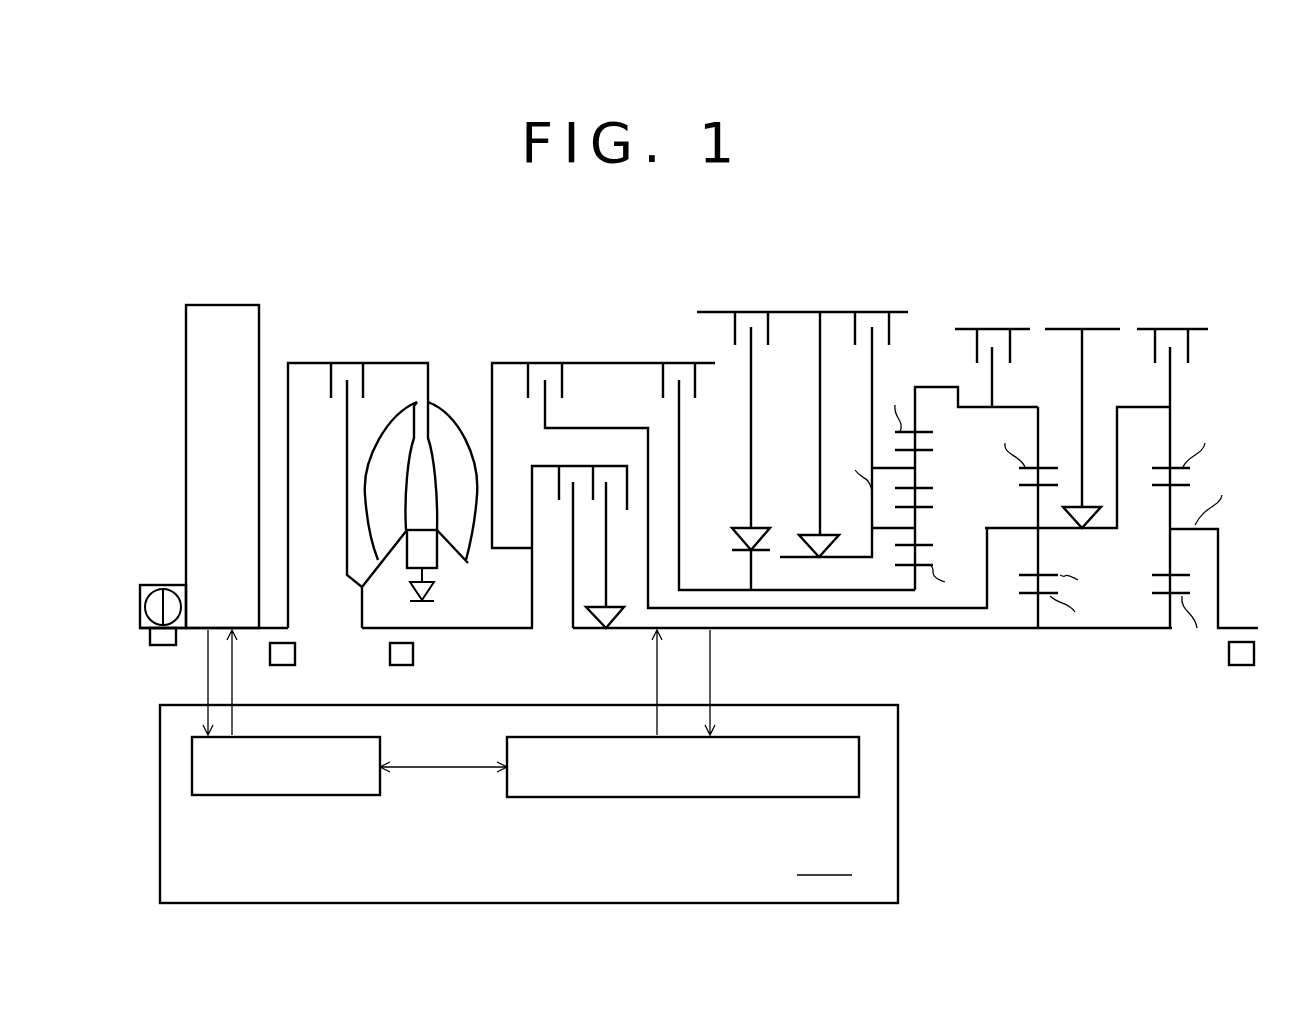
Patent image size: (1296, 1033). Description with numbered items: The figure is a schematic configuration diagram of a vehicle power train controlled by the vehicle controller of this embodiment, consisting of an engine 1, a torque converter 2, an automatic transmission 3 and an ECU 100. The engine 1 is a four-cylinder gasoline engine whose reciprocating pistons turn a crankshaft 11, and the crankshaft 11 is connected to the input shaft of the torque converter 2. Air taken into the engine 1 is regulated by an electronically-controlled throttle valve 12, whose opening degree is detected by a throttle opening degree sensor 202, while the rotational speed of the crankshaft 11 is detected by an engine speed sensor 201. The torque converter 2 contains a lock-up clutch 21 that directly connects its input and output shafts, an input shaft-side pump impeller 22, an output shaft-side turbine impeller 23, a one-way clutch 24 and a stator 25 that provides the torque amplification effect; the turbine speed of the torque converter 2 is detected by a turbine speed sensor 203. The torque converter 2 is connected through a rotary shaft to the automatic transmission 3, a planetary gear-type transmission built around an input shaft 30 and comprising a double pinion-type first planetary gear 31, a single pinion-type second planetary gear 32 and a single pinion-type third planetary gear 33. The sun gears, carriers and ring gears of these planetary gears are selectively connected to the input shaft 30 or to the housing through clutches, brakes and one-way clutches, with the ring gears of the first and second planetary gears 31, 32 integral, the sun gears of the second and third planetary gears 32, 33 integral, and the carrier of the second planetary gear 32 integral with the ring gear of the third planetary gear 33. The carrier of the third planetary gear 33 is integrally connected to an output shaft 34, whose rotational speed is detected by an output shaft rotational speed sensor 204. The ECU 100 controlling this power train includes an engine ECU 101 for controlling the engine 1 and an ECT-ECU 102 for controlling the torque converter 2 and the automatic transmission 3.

The engine 1 is at (226, 304).
The torque converter 2 is at (410, 448).
The automatic transmission 3 is at (882, 477).
The crankshaft 11 is at (267, 632).
The throttle valve 12 is at (150, 583).
The lock-up clutch 21 is at (342, 392).
The pump impeller 22 is at (466, 548).
The turbine impeller 23 is at (378, 490).
The one-way clutch 24 is at (440, 593).
The stator 25 is at (412, 558).
The input shaft 30 is at (507, 632).
The first planetary gear 31 is at (902, 594).
The second planetary gear 32 is at (1040, 642).
The third planetary gear 33 is at (1172, 642).
The output shaft 34 is at (1243, 626).
The ECU 100 is at (569, 766).
The engine ECU 101 is at (317, 797).
The ECT-ECU 102 is at (707, 798).
The engine speed sensor 201 is at (296, 650).
The throttle opening degree sensor 202 is at (160, 648).
The turbine speed sensor 203 is at (414, 650).
The output shaft rotational speed sensor 204 is at (1240, 665).